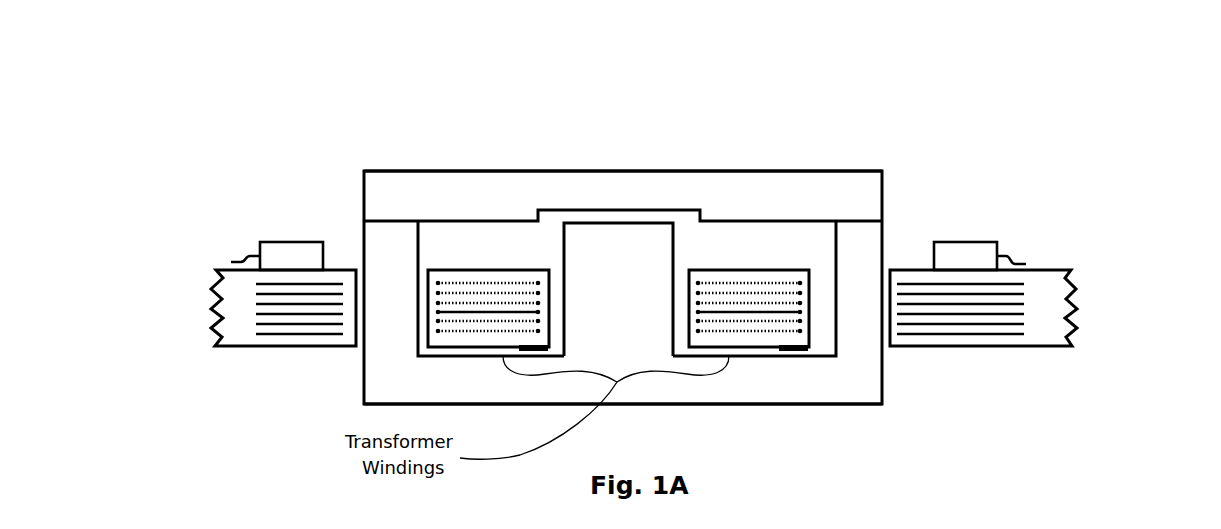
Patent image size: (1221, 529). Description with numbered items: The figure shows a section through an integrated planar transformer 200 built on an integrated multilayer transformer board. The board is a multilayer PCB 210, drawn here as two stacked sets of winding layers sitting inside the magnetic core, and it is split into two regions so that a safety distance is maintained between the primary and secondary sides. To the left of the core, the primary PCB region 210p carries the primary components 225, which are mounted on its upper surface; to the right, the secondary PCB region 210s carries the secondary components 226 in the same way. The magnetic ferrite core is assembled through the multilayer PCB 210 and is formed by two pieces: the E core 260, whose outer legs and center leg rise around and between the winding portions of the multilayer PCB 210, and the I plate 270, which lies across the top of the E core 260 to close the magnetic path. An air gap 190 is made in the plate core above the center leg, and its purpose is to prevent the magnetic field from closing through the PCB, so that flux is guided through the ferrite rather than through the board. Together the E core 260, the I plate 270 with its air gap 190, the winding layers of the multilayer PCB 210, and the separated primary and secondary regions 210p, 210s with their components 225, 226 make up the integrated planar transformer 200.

The transformer module 200 is at (895, 215).
The I plate 270 is at (485, 207).
The air gap 190 is at (615, 217).
The E core 260 is at (848, 380).
The multilayer PCB 210 is at (543, 297).
The primary components 225 is at (287, 233).
The secondary components 226 is at (991, 234).
The primary PCB region 210p is at (240, 295).
The secondary PCB region 210s is at (1040, 320).